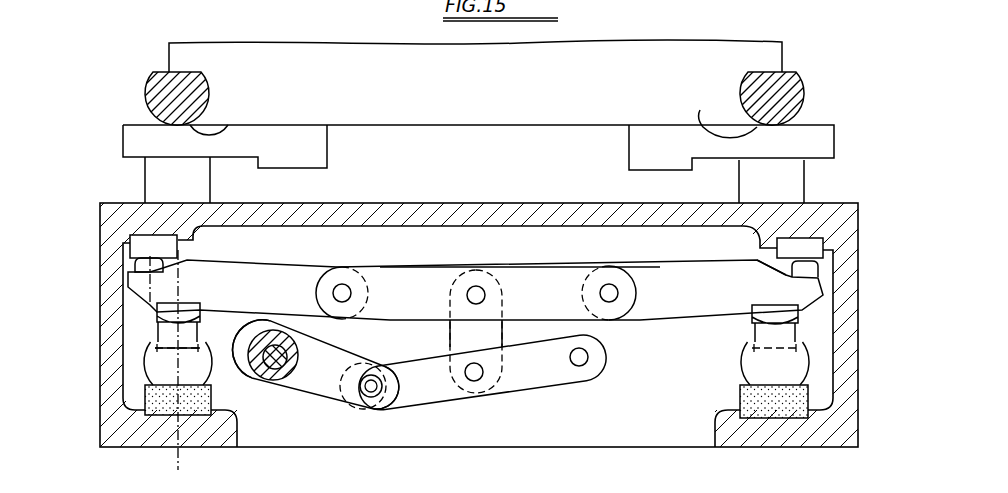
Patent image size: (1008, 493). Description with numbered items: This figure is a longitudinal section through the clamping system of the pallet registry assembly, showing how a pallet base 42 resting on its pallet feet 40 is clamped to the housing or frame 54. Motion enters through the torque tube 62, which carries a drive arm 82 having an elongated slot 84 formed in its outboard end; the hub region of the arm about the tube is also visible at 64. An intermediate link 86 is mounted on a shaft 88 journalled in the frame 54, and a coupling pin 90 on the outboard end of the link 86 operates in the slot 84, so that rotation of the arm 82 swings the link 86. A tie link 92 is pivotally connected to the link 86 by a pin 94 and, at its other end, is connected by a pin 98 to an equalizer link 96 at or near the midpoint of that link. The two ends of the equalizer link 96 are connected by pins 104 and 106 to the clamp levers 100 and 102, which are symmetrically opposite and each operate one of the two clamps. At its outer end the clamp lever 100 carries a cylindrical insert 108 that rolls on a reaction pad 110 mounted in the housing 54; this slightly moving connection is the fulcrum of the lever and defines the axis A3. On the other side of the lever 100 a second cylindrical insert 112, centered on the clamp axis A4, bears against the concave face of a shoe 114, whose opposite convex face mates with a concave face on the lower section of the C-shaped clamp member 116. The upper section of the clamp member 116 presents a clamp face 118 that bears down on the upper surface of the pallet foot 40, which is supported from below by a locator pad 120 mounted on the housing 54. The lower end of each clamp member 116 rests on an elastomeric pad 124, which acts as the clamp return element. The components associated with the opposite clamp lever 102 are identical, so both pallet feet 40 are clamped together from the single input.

The frame 54 is at (858, 382).
The pallet base 42 is at (475, 64).
The clamp member 116 is at (150, 95).
The pallet foot 40 is at (307, 142).
The clamp face 118 is at (227, 124).
The locator pad 120 is at (152, 178).
The reaction pad 110 is at (130, 243).
The elastomeric pad 124 is at (740, 398).
The clamp lever 100 is at (284, 268).
The cylindrical insert 108 is at (133, 266).
The fulcrum axis A3 is at (128, 289).
The clamp axis A4 is at (178, 455).
The cylindrical insert 112 is at (160, 313).
The shoe 114 is at (160, 333).
The clamp lever 102 is at (693, 267).
The pin 104 is at (344, 289).
The pin 106 is at (611, 290).
The equalizer link 96 is at (433, 267).
The tie link 92 is at (457, 335).
The pin 98 is at (480, 290).
The pin 94 is at (475, 381).
The drive arm 82 is at (340, 412).
The torque tube 62 is at (263, 383).
The hub 64 is at (290, 368).
The coupling pin 90 is at (358, 387).
The intermediate link 86 is at (550, 392).
The elongated slot 84 is at (393, 398).
The shaft 88 is at (586, 364).